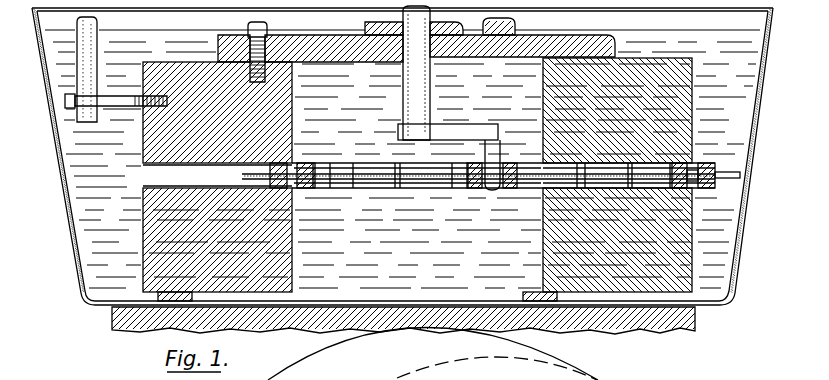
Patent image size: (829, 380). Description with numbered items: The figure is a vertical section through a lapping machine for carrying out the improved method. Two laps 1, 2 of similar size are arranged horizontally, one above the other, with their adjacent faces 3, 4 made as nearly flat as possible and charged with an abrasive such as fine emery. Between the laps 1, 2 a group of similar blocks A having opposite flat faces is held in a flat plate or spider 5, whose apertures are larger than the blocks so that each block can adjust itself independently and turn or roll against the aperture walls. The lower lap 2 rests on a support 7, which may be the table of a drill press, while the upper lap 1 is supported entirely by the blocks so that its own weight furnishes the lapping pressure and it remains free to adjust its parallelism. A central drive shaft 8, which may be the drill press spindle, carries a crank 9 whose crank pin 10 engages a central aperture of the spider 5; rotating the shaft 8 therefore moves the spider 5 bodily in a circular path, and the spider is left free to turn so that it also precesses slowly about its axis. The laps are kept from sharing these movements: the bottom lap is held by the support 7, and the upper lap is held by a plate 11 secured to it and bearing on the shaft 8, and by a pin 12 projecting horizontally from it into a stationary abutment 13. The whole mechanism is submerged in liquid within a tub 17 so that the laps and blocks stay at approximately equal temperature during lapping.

The upper lap 1 is at (143, 148).
The lower lap 2 is at (157, 248).
The adjacent face of upper lap 3 is at (147, 165).
The adjacent face of lower lap 4 is at (147, 185).
The spider 5 is at (742, 178).
The support 7 is at (112, 325).
The central drive shaft 8 is at (378, 22).
The crank 9 is at (450, 131).
The crank pin 10 is at (492, 190).
The plate 11 is at (240, 37).
The pin 12 is at (65, 100).
The stationary abutment 13 is at (77, 70).
The tub 17 is at (82, 276).
The blocks A is at (715, 168).